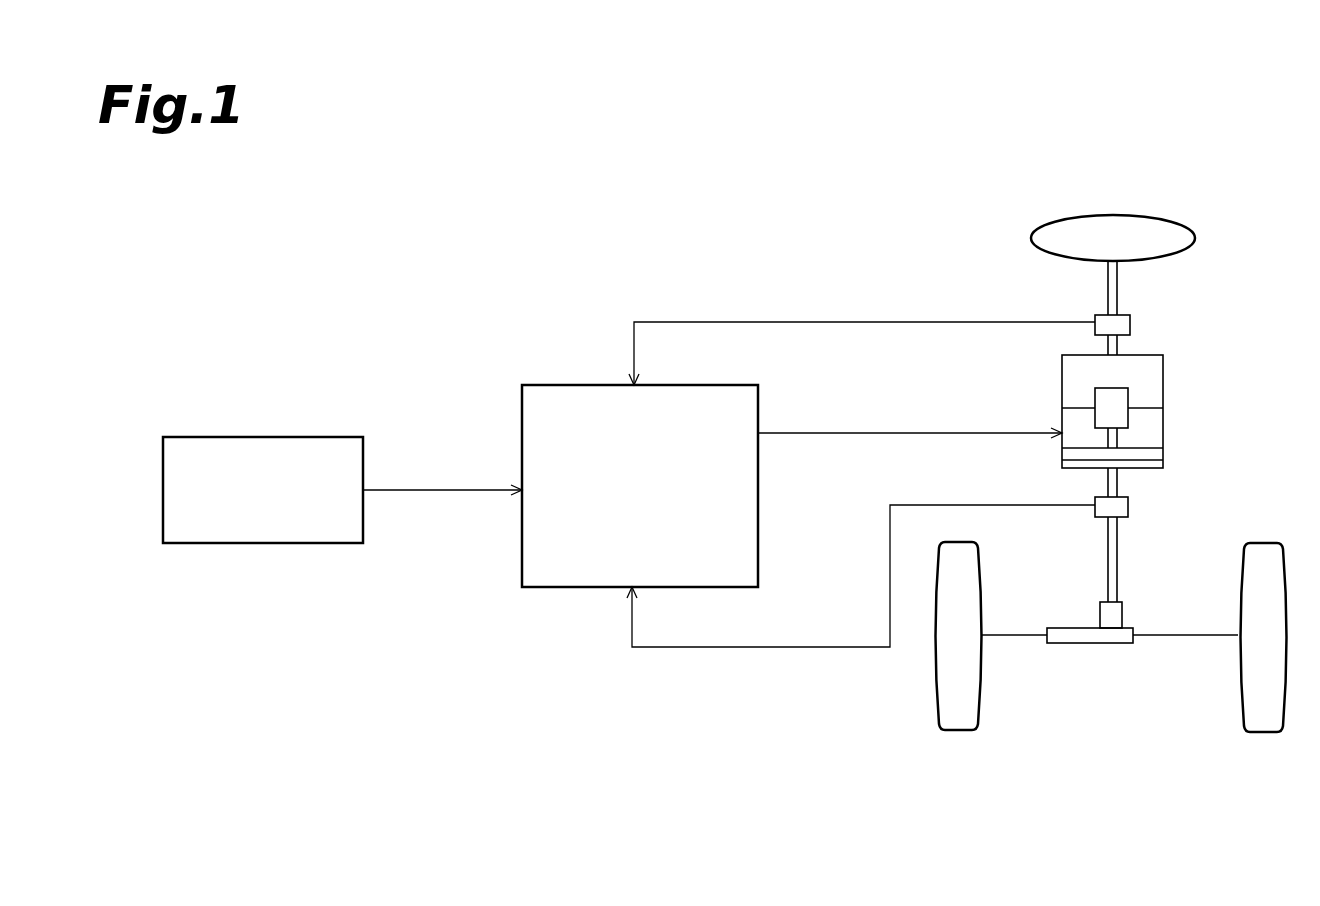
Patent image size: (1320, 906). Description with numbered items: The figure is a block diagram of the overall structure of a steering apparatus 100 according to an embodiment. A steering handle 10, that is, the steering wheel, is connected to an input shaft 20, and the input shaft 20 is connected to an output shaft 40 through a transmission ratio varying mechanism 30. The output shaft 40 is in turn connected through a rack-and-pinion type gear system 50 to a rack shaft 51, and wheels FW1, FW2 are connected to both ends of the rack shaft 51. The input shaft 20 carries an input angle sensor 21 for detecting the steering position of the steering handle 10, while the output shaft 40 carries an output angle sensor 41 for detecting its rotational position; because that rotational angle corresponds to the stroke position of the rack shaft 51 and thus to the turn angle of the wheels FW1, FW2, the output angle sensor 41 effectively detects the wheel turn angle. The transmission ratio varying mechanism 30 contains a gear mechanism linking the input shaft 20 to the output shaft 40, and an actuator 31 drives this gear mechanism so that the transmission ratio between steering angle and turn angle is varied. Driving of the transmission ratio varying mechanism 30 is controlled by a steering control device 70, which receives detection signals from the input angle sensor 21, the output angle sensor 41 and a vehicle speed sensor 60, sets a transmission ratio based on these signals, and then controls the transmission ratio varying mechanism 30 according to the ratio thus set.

The steering apparatus 100 is at (648, 198).
The steering handle 10 is at (1165, 218).
The input shaft 20 is at (1120, 285).
The input angle sensor 21 is at (1130, 325).
The transmission ratio varying mechanism 30 is at (1163, 370).
The actuator 31 is at (1096, 392).
The output shaft 40 is at (1118, 560).
The output angle sensor 41 is at (1128, 507).
The rack-and-pinion type gear system 50 is at (1080, 645).
The rack shaft 51 is at (1175, 640).
The vehicle speed sensor 60 is at (265, 437).
The steering control device 70 is at (758, 512).
The wheel FW1 is at (950, 732).
The wheel FW2 is at (1265, 733).